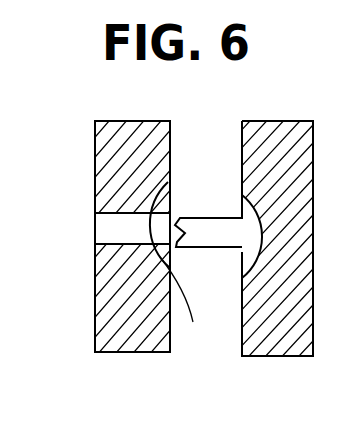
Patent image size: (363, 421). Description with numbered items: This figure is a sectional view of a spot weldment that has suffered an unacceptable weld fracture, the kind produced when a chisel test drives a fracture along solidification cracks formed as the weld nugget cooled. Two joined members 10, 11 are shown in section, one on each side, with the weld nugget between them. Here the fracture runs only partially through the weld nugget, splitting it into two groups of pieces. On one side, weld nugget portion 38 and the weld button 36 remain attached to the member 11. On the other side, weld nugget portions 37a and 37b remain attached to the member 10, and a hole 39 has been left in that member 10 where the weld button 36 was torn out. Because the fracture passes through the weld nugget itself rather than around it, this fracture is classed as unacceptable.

The member 10 is at (117, 158).
The member 11 is at (285, 142).
The weld button 36 is at (195, 230).
The weld nugget portion 37a is at (172, 198).
The weld nugget portion 37b is at (197, 305).
The weld nugget portion 38 is at (257, 241).
The hole 39 is at (148, 213).